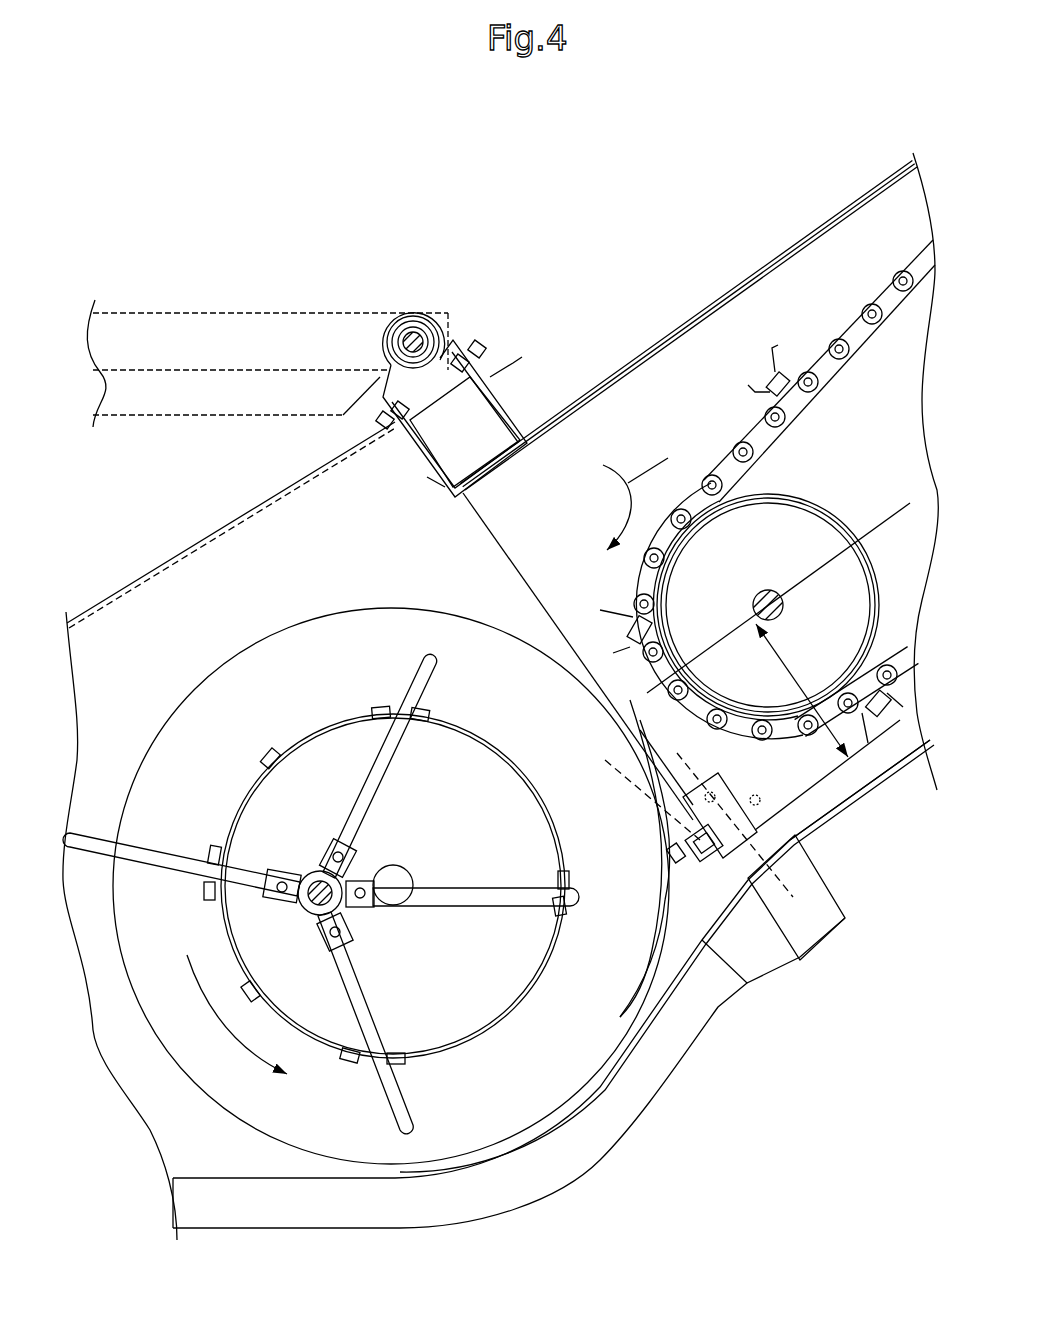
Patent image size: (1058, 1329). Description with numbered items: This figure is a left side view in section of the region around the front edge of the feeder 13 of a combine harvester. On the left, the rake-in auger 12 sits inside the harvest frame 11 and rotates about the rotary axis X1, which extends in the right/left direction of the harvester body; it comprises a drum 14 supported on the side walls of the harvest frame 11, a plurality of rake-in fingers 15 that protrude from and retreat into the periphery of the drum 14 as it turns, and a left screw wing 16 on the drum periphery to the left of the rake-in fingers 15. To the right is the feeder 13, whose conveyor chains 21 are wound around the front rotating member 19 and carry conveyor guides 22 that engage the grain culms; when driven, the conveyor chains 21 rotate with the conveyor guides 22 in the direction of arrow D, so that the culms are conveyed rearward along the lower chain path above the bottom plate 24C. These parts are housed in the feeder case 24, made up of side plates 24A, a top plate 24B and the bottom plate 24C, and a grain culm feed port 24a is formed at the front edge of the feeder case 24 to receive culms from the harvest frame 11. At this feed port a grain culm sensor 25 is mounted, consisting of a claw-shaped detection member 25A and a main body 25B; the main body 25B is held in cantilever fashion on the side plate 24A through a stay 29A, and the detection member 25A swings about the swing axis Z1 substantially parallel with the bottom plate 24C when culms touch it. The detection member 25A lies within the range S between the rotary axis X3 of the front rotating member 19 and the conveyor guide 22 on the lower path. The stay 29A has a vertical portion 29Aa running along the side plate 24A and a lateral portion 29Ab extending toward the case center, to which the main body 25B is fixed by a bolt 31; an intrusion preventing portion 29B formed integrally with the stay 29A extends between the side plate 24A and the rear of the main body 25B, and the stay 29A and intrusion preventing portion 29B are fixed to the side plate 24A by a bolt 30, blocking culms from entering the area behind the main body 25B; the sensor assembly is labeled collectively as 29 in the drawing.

The harvest frame 11 is at (167, 597).
The rake-in auger 12 is at (267, 637).
The feeder 13 is at (603, 347).
The drum 14 is at (490, 1027).
The rake-in fingers 15 is at (90, 847).
The left screw wing 16 is at (470, 1123).
The front rotating member 19 is at (828, 497).
The conveyor chains 21 is at (730, 465).
The conveyor guides 22 is at (780, 376).
The feeder case 24 is at (748, 285).
The side plate 24A is at (837, 263).
The top plate 24B is at (678, 337).
The bottom plate 24C is at (893, 773).
The grain culm feed port 24a is at (505, 547).
The grain culm sensor 25 is at (718, 870).
The detection member 25A is at (747, 833).
The main body 25B is at (693, 833).
The guide member 29 is at (697, 830).
The stay 29A is at (616, 858).
The vertical portion 29Aa is at (670, 937).
The lateral portion 29Ab is at (717, 867).
The intrusion preventing portion 29B is at (758, 800).
The bolt 30 is at (754, 842).
The bolt 31 is at (677, 853).
The direction of rotation of conveyor chains D is at (612, 492).
The range of space S is at (778, 630).
The rotary axis X1 is at (395, 878).
The rotary axis X3 is at (756, 592).
The swing axis Z1 is at (635, 789).